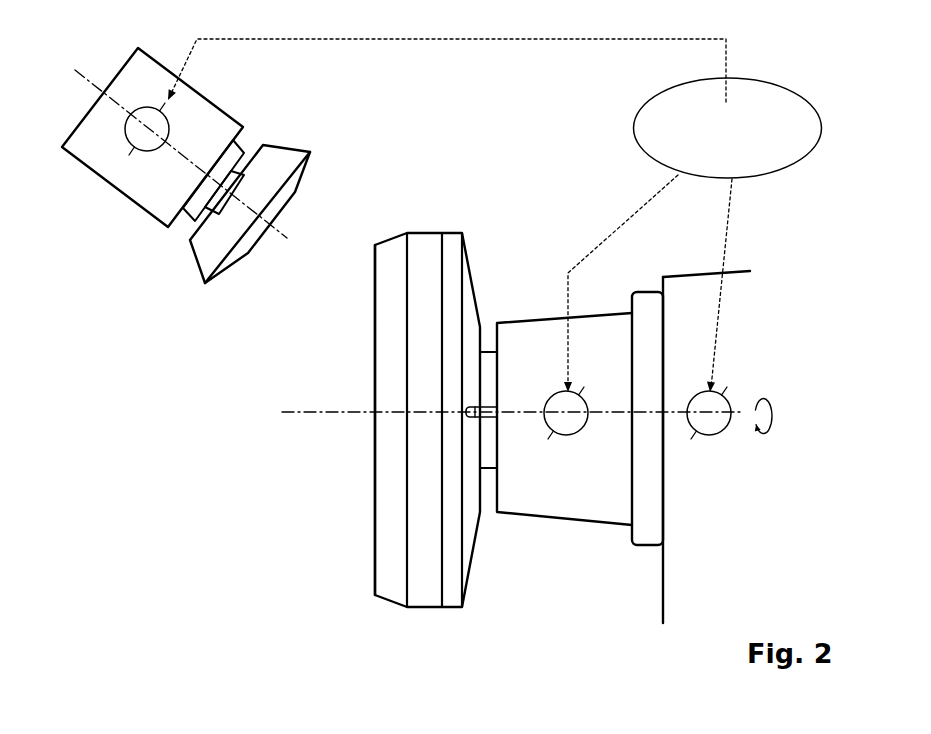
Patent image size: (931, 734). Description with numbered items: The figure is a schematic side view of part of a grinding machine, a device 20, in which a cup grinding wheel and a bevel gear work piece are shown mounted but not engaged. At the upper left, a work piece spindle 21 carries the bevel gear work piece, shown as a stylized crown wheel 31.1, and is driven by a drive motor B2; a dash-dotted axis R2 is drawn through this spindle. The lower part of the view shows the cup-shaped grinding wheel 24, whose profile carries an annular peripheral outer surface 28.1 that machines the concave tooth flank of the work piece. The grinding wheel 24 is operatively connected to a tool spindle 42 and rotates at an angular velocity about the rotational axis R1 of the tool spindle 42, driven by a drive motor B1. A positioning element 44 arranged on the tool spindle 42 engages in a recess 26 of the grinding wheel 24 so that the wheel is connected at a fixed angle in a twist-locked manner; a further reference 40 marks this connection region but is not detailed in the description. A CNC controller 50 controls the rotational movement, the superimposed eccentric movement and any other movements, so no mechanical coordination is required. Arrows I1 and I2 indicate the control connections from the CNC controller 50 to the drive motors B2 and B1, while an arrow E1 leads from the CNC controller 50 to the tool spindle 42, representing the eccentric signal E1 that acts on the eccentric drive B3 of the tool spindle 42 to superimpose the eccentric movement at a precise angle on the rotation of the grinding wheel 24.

The device 20 is at (448, 114).
The work piece spindle 21 is at (210, 110).
The grinding wheel 24 is at (418, 604).
The recess 26 is at (467, 418).
The annular peripheral outer surface 28.1 is at (380, 591).
The stylized crown wheel 31.1 is at (290, 150).
The bearing point 40 is at (492, 433).
The tool spindle 42 is at (575, 514).
The positioning element 44 is at (491, 352).
The CNC controller 50 is at (740, 136).
The drive motor B1 is at (709, 413).
The drive motor B2 is at (147, 129).
The eccentric drive B3 is at (566, 413).
The rotational axis R1 is at (498, 413).
The rotation axis R2 is at (167, 146).
The control connection I1 is at (447, 57).
The control connection I2 is at (731, 285).
The eccentric signal E1 is at (621, 283).